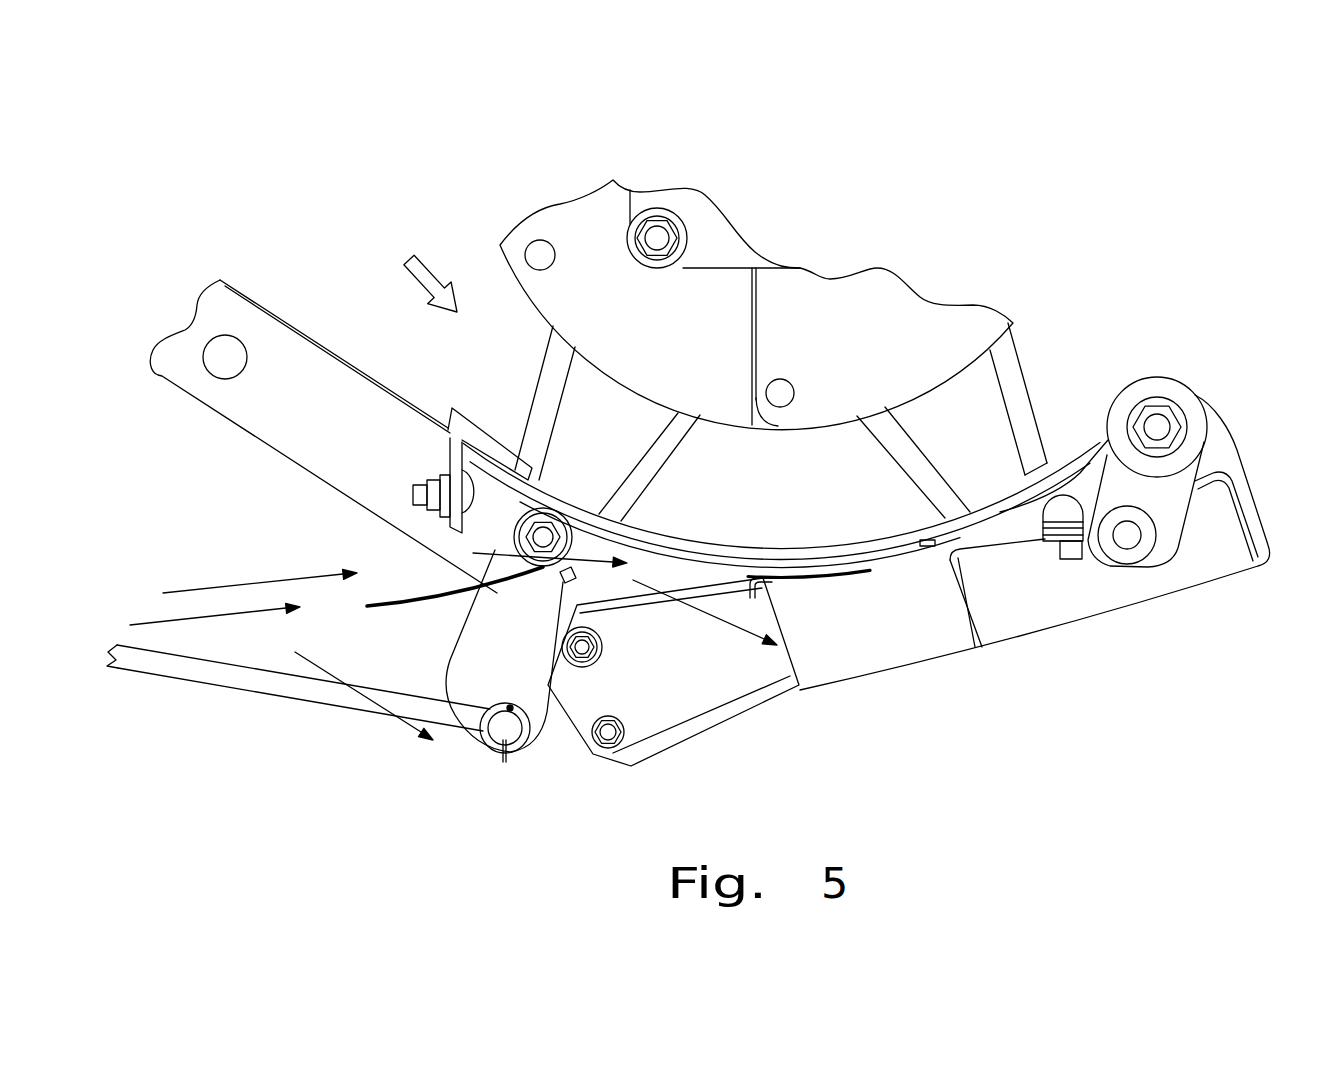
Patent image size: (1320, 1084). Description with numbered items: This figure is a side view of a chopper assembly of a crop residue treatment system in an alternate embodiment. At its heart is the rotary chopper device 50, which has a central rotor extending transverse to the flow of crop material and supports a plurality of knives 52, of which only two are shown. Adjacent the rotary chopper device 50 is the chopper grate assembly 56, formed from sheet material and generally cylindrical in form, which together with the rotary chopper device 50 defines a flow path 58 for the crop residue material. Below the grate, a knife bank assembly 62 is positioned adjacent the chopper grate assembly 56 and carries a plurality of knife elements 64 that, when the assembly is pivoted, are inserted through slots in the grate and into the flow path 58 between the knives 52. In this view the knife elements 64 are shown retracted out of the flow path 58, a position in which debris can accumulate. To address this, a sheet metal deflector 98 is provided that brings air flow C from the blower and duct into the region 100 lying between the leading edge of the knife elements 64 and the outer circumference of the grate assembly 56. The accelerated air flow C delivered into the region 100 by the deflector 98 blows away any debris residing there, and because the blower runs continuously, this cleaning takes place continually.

The rotary chopper device 50 is at (513, 325).
The knives 52 is at (690, 434).
The chopper grate assembly 56 is at (368, 373).
The flow path 58 is at (332, 312).
The knife bank assembly 62 is at (560, 737).
The knife elements 64 is at (707, 728).
The deflector 98 is at (413, 608).
The region 100 is at (650, 565).
The air flow C is at (243, 586).